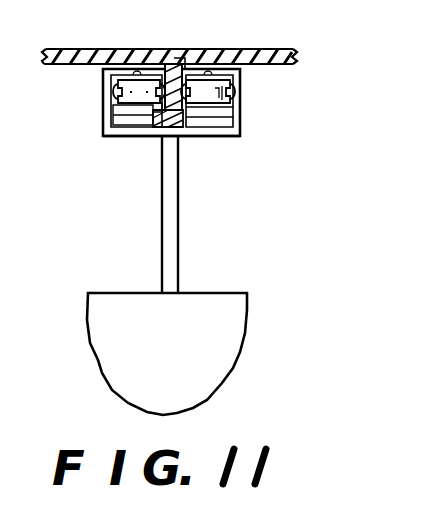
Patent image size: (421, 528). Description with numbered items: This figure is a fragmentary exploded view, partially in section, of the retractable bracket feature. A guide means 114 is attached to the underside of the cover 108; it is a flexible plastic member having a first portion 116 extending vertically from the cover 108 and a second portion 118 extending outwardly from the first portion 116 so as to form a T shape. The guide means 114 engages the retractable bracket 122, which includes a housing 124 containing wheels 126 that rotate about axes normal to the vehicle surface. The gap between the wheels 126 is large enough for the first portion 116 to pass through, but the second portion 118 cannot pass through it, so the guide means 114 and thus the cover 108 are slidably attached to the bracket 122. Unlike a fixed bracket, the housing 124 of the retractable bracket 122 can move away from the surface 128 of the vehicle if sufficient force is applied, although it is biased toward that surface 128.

The cover 108 is at (233, 53).
The guide means 114 is at (182, 137).
The first portion 116 is at (150, 130).
The second portion 118 is at (150, 137).
The retractable bracket 122 is at (253, 129).
The housing 124 is at (103, 126).
The wheels 126 is at (118, 91).
The surface 128 is at (214, 296).